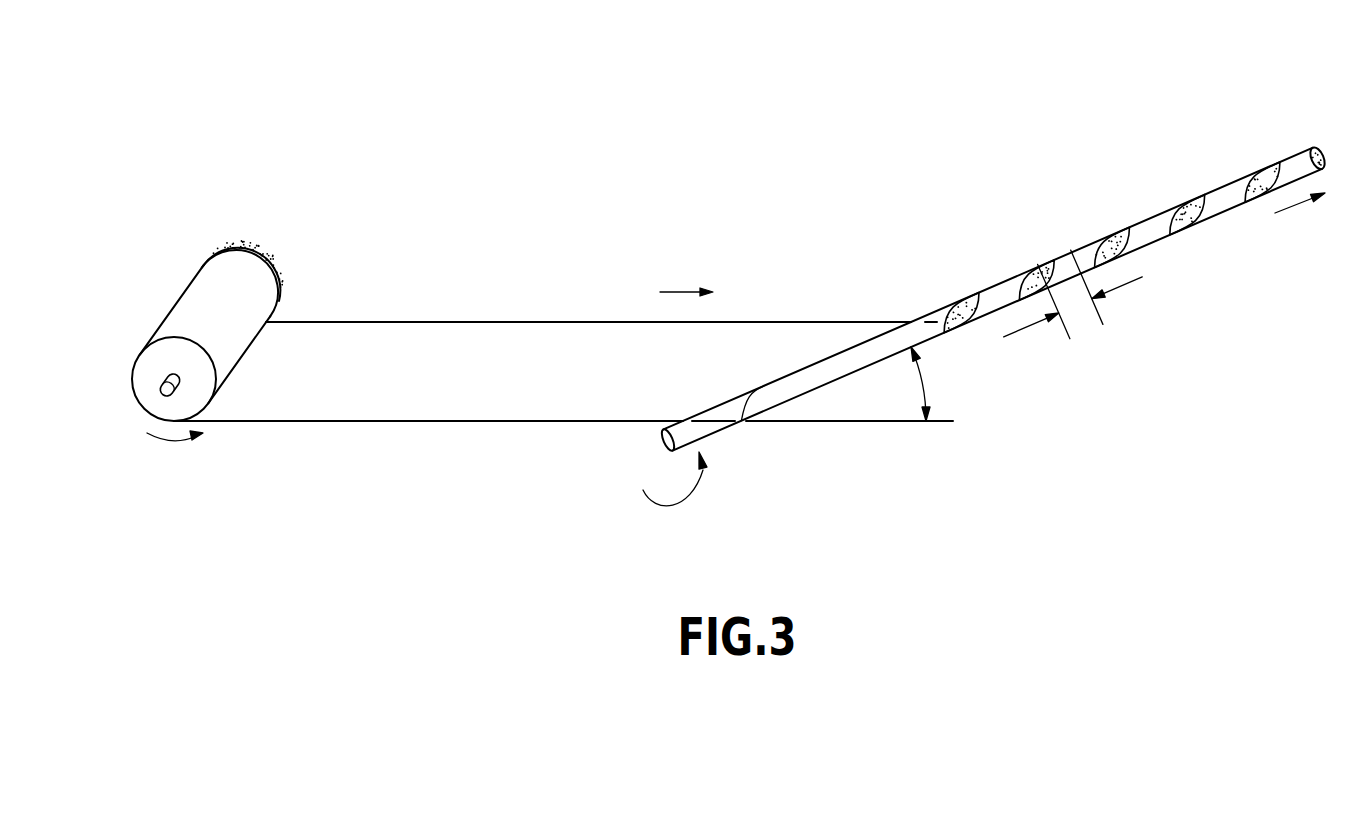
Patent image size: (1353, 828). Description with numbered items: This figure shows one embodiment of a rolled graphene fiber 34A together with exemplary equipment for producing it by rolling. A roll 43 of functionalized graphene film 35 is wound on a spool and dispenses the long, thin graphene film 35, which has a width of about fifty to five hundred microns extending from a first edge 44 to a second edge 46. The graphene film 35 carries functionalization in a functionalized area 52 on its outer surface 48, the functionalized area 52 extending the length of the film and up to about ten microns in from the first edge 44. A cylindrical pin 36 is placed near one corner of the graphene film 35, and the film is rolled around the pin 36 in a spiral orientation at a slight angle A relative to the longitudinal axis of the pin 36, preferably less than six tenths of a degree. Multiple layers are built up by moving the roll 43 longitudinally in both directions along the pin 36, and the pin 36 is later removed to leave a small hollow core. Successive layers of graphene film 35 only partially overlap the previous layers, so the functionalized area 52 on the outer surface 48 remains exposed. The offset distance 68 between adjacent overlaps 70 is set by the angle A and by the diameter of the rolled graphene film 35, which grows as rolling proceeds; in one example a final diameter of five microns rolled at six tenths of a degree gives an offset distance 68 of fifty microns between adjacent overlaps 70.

The roll 43 is at (177, 314).
The outer surface 48 is at (170, 320).
The functionalized area 52 is at (226, 252).
The first edge 44 is at (298, 423).
The second edge 46 is at (378, 321).
The graphene film 35 is at (563, 373).
The cylindrical pin 36 is at (958, 324).
The rolled graphene fiber 34A is at (1317, 158).
The adjacent overlaps 70 is at (1112, 247).
The offset distance 68 is at (1068, 295).
The angle A is at (921, 378).